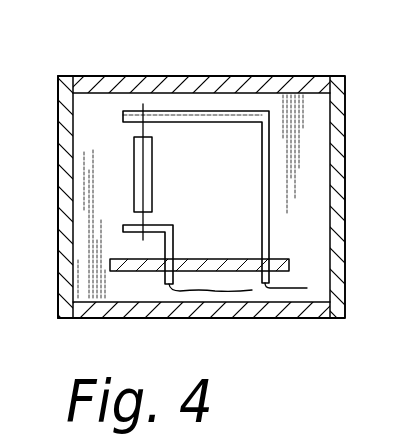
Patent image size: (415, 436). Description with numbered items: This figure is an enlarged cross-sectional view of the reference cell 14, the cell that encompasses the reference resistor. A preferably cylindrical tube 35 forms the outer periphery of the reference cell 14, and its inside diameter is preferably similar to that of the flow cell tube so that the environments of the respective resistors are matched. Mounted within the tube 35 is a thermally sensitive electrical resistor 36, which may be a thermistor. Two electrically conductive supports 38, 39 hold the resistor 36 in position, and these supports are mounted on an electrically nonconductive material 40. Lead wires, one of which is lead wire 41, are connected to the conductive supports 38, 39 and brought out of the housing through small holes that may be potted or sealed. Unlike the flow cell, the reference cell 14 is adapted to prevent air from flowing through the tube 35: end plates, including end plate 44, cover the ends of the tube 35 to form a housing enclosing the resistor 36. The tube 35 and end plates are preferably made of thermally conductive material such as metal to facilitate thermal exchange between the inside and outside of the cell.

The reference cell 14 is at (268, 57).
The tube 35 is at (318, 77).
The thermally sensitive electrical resistor 36 is at (138, 187).
The electrically conductive support 38 is at (173, 226).
The electrically conductive support 39 is at (173, 111).
The electrically nonconductive material 40 is at (281, 260).
The lead wire 41 is at (248, 291).
The end plate 44 is at (345, 197).